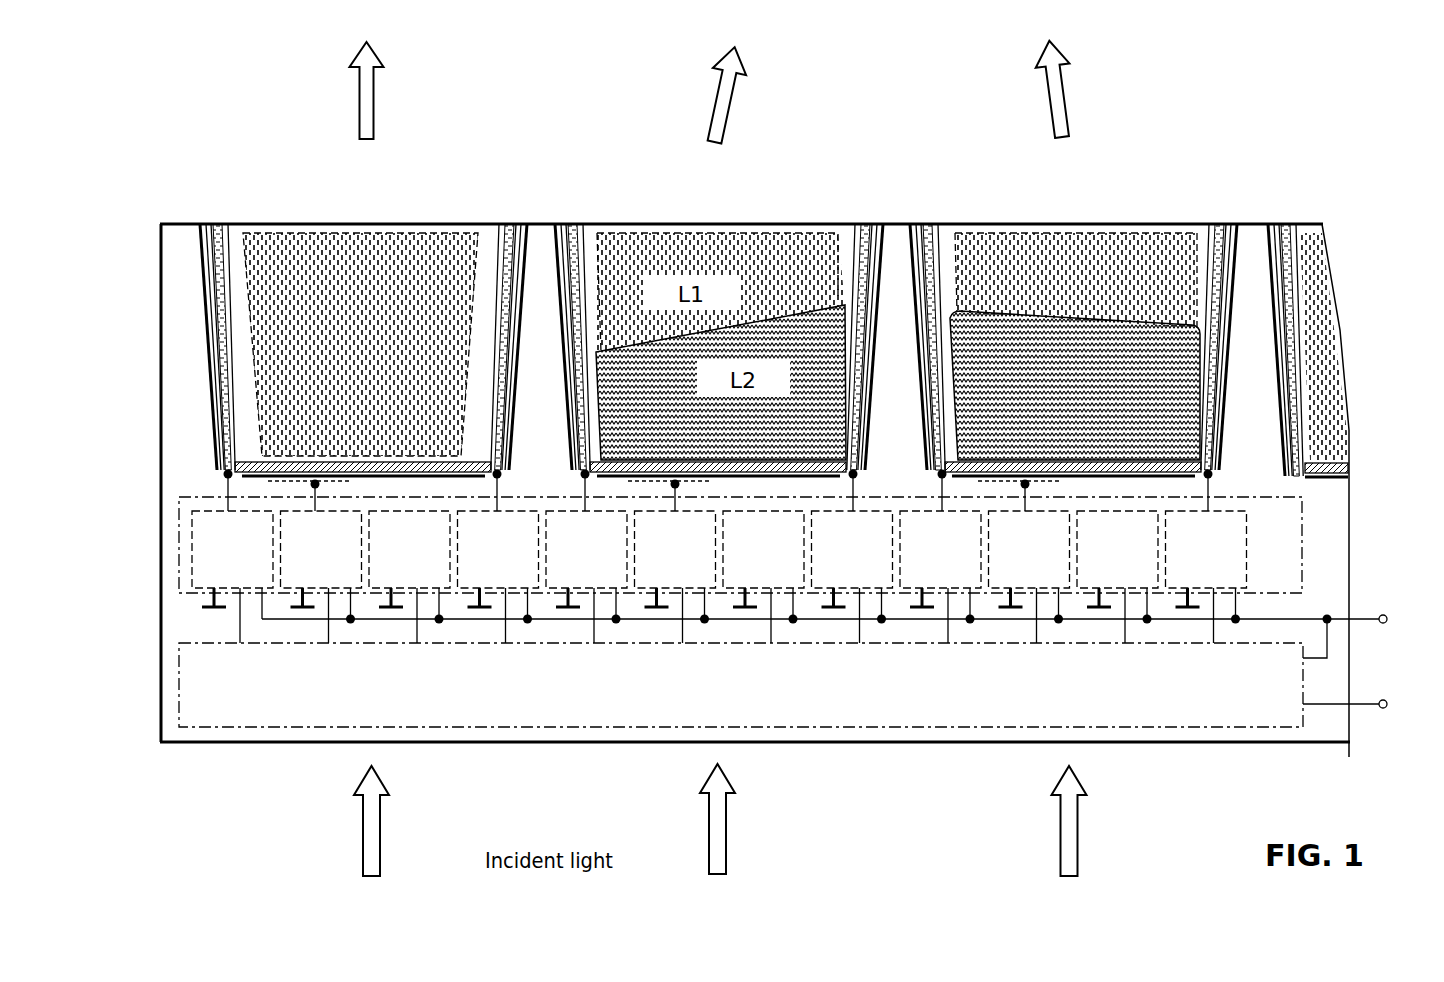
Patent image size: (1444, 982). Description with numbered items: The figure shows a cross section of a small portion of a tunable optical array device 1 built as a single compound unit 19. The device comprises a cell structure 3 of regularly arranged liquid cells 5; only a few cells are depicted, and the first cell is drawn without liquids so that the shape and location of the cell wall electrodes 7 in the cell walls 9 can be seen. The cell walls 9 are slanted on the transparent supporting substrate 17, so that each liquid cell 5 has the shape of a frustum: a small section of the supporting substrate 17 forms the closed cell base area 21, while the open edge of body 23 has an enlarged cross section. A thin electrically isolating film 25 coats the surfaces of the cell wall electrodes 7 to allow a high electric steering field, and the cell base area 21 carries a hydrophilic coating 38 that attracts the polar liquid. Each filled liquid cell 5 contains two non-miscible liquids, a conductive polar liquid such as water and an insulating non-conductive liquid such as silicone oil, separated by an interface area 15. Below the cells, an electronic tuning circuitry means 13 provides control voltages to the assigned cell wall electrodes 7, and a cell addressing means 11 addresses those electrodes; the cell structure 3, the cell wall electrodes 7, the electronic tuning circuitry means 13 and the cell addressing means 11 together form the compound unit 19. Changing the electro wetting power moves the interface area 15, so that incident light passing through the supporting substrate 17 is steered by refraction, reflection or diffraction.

The tunable optical array device 1 is at (298, 148).
The cell structure 3 is at (997, 257).
The liquid cell 5 is at (1052, 283).
The cell wall electrode 7 is at (503, 317).
The cell wall 9 is at (176, 287).
The cell addressing means 11 is at (1283, 691).
The electronic tuning circuitry means 13 is at (1280, 532).
The interface area 15 is at (1062, 322).
The supporting substrate 17 is at (178, 612).
The compound unit 19 is at (1318, 575).
The cell base area 21 is at (1090, 460).
The open edge of body 23 is at (1245, 290).
The electrically isolating film 25 is at (1200, 247).
The hydrophilic coating 38 is at (1327, 462).